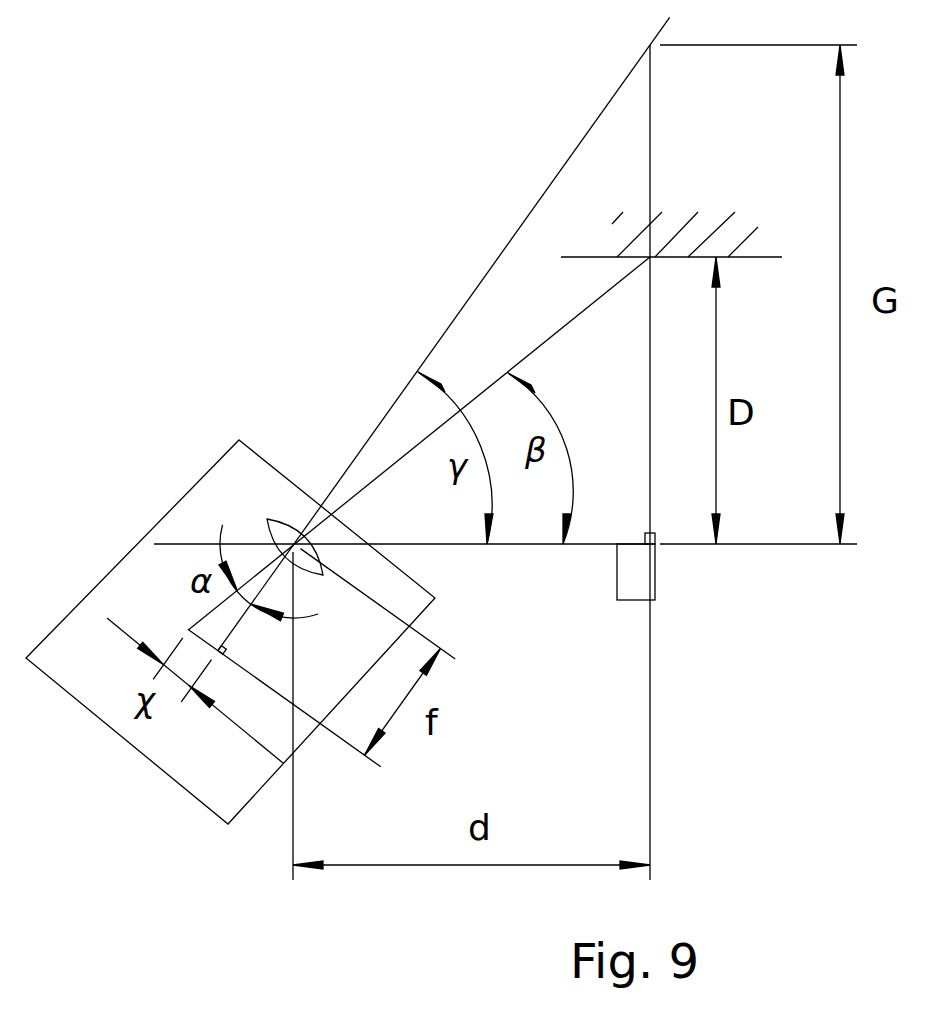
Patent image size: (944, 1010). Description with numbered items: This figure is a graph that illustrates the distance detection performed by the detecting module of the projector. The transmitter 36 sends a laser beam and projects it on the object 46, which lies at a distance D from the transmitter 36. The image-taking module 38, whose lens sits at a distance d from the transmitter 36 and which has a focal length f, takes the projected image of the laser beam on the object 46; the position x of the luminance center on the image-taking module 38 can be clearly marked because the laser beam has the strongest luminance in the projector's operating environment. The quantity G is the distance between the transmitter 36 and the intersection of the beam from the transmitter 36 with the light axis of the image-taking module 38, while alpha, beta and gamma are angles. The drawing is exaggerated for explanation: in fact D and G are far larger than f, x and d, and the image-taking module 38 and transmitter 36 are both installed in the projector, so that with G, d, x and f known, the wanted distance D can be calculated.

The transmitter 36 is at (637, 600).
The image-taking module 38 is at (435, 598).
The object 46 is at (735, 231).